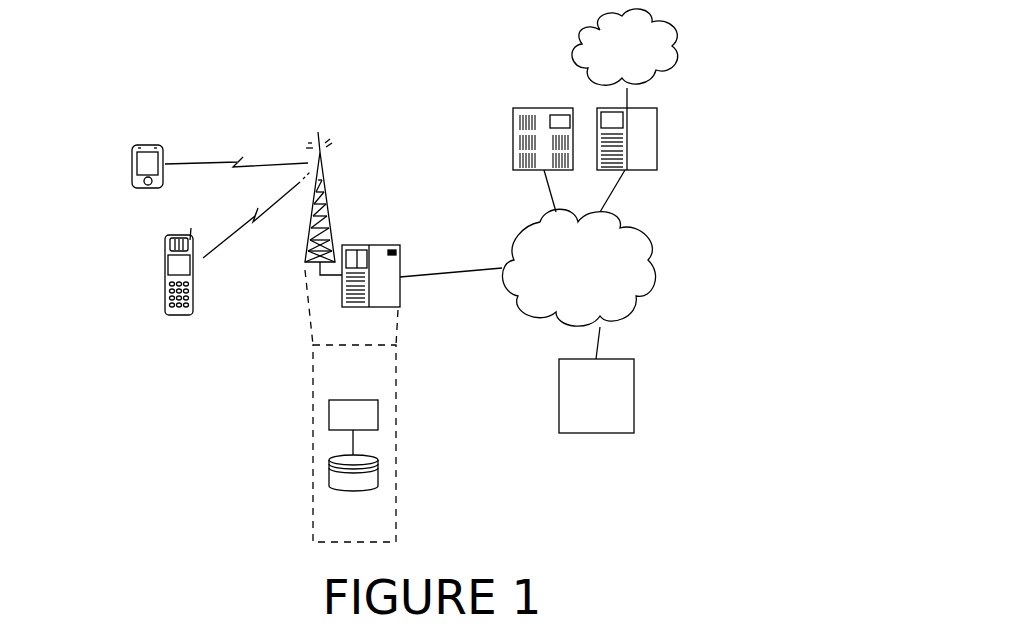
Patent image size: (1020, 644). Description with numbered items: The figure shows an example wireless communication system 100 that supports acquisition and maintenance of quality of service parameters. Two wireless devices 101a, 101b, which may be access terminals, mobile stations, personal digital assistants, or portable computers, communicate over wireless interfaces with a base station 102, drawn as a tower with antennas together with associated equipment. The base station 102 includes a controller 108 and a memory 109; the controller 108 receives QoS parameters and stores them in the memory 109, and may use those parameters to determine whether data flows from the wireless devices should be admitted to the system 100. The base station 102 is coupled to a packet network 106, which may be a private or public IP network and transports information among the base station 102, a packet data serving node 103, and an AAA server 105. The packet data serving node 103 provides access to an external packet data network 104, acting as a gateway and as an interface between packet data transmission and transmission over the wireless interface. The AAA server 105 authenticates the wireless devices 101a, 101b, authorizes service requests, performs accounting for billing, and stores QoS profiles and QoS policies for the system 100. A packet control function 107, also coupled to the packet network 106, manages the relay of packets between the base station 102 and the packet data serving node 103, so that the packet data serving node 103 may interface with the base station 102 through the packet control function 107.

The wireless communication system 100 is at (719, 445).
The wireless device 101a is at (147, 145).
The wireless device 101b is at (185, 315).
The base station 102 is at (396, 118).
The packet data serving node 103 is at (657, 136).
The packet data network 104 is at (678, 48).
The AAA server 105 is at (513, 113).
The packet network 106 is at (536, 312).
The packet control function 107 is at (597, 433).
The controller 108 is at (355, 398).
The memory 109 is at (355, 492).